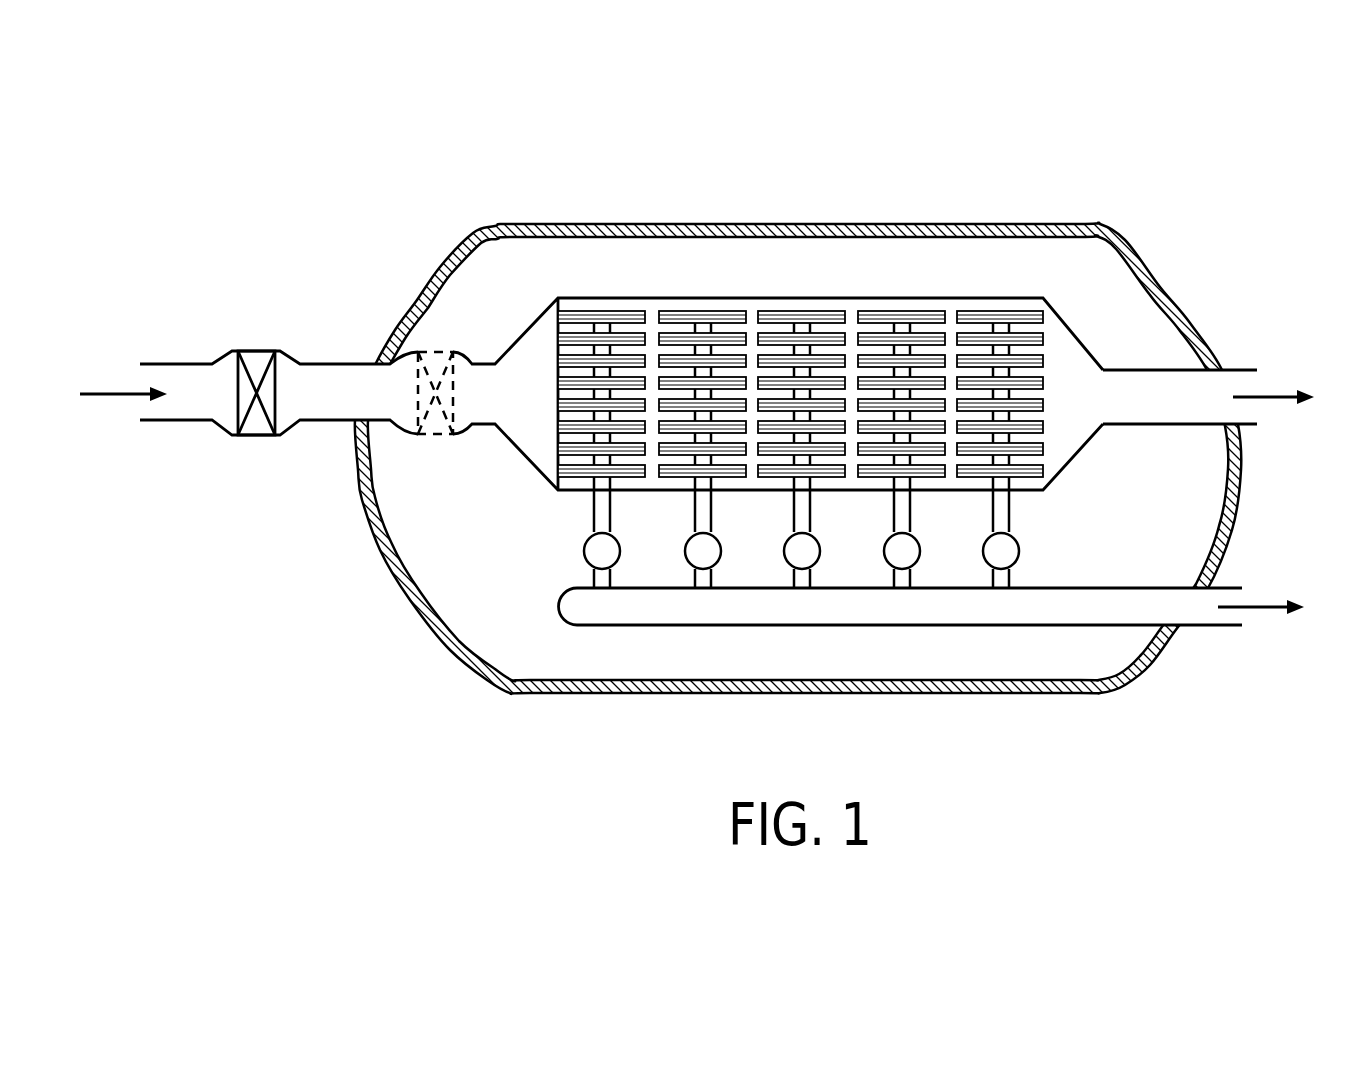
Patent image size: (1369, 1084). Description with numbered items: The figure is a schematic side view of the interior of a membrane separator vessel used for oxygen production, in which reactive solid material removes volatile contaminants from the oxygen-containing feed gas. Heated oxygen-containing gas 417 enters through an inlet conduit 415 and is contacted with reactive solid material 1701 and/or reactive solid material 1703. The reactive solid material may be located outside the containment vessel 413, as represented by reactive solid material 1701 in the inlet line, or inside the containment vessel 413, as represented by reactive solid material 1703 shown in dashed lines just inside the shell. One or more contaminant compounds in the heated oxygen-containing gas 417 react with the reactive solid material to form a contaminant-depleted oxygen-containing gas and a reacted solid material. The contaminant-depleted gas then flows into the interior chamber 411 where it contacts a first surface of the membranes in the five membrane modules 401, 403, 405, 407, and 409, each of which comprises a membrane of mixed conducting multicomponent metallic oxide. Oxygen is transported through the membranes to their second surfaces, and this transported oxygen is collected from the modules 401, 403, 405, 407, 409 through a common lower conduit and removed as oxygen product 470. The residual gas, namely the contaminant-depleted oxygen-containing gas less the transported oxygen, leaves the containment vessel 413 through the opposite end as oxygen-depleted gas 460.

The membrane module 401 is at (606, 311).
The membrane module 403 is at (703, 311).
The membrane module 405 is at (802, 311).
The membrane module 407 is at (893, 311).
The membrane module 409 is at (1008, 311).
The reaction chamber housing 411 is at (535, 322).
The containment vessel 413 is at (525, 224).
The inlet conduit 415 is at (348, 364).
The heated oxygen-containing gas 417 is at (105, 385).
The oxygen-depleted gas 460 is at (1280, 397).
The oxygen product 470 is at (1262, 607).
The reactive solid material 1701 is at (258, 428).
The reactive solid material 1703 is at (434, 438).